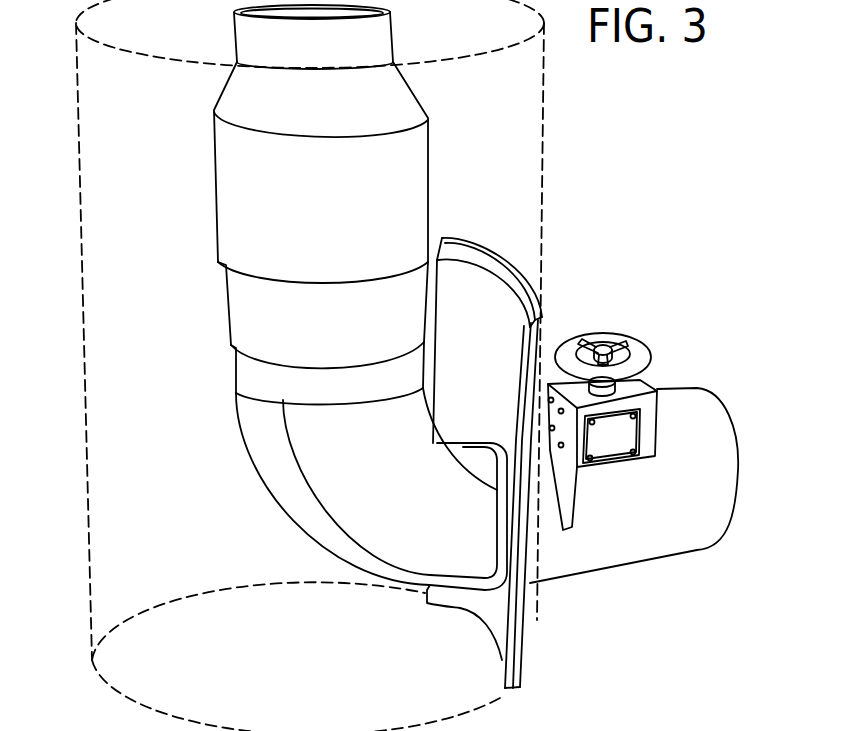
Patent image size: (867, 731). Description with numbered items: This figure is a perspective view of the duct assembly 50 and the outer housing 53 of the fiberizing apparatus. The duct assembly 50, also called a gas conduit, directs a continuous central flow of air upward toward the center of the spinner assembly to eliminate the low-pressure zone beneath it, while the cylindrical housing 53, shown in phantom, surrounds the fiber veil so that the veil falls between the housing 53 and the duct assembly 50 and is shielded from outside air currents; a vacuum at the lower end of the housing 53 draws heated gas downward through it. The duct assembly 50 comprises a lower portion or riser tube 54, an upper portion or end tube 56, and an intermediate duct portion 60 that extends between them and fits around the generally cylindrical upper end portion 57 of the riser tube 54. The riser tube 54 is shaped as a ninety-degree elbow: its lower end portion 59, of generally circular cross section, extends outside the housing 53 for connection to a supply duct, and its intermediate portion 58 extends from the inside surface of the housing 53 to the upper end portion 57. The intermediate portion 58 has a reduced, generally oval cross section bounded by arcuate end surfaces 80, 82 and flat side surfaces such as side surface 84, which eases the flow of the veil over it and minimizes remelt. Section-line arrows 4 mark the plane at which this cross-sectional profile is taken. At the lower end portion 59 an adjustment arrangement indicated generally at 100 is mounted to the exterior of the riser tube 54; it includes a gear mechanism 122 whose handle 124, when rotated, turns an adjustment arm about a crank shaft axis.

The section line 4- 4 is at (85, 307).
The cylindrical housing 53 is at (545, 105).
The duct assembly 50 is at (430, 152).
The upper portion 56 is at (228, 160).
The intermediate duct portion 60 is at (228, 322).
The upper end portion 57 is at (246, 380).
The riser tube 54 is at (247, 437).
The intermediate portion 58 is at (292, 515).
The curved end surface 82 is at (330, 537).
The flat side surface 84 is at (372, 523).
The curved end surface 80 is at (446, 446).
The gear mechanism 122 is at (648, 388).
The handle 124 is at (628, 334).
The lower end portion 59 is at (677, 545).
The filter assembly 100 is at (566, 207).